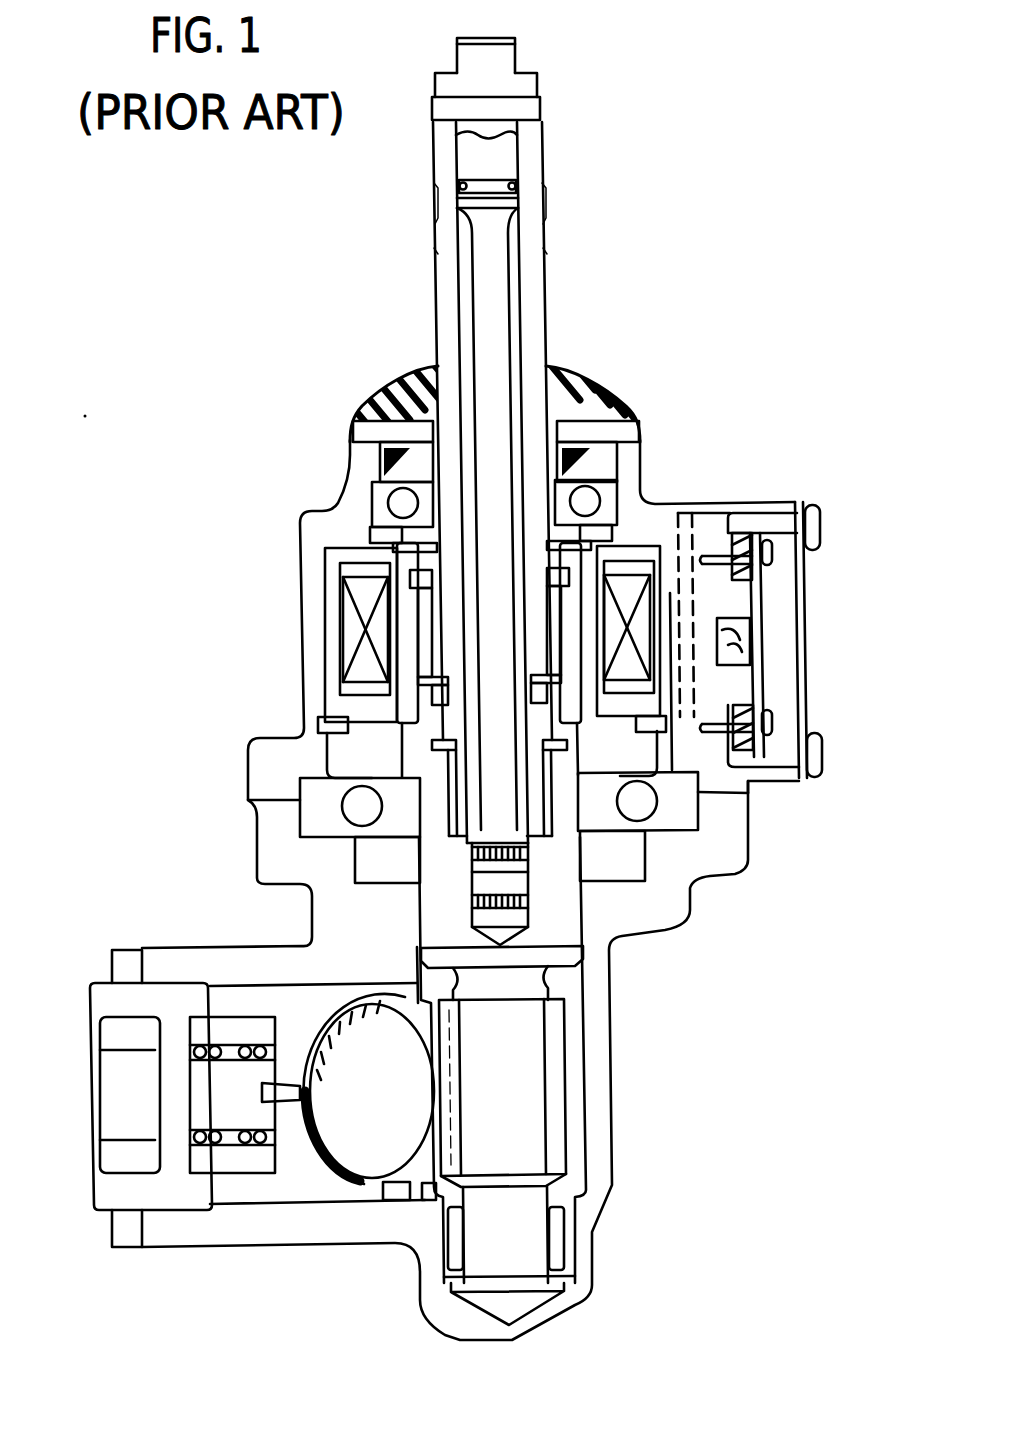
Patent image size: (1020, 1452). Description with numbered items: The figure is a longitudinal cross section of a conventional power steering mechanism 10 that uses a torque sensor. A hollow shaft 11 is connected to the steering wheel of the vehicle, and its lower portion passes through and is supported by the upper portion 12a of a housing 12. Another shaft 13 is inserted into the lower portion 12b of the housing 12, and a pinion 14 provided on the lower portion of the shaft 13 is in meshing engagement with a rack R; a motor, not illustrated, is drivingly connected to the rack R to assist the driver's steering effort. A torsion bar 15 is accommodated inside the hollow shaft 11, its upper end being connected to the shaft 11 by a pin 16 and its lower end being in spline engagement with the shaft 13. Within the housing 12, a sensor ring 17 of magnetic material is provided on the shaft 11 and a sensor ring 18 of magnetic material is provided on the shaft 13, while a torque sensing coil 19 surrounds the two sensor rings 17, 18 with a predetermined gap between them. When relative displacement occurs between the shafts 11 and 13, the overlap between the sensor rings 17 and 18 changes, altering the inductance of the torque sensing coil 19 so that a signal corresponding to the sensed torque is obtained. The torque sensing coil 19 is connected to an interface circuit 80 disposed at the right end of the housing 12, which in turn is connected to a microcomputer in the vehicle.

The steering mechanism 10 is at (300, 277).
The hollow shaft 11 is at (528, 158).
The housing 12 is at (256, 525).
The upper portion of the housing 12a is at (317, 532).
The lower portion of the housing 12b is at (267, 862).
The shaft 13 is at (555, 917).
The pinion 14 is at (547, 1085).
The torsion bar 15 is at (495, 323).
The pin 16 is at (525, 105).
The sensor ring 17 is at (403, 623).
The sensor ring 18 is at (403, 645).
The torque sensing coil 19 is at (357, 630).
The interface circuit 80 is at (750, 637).
The rack R is at (355, 1147).